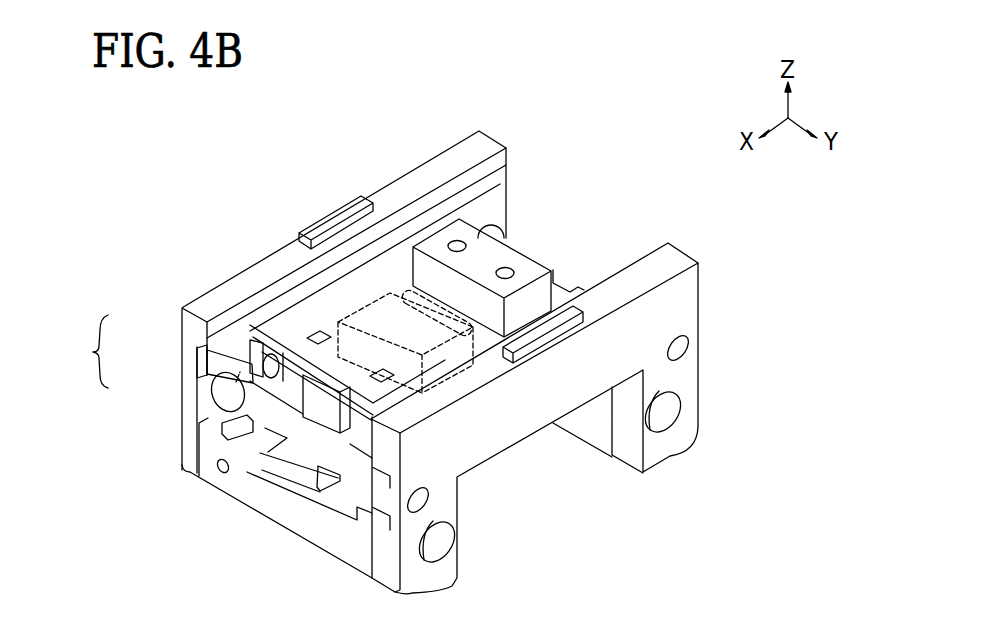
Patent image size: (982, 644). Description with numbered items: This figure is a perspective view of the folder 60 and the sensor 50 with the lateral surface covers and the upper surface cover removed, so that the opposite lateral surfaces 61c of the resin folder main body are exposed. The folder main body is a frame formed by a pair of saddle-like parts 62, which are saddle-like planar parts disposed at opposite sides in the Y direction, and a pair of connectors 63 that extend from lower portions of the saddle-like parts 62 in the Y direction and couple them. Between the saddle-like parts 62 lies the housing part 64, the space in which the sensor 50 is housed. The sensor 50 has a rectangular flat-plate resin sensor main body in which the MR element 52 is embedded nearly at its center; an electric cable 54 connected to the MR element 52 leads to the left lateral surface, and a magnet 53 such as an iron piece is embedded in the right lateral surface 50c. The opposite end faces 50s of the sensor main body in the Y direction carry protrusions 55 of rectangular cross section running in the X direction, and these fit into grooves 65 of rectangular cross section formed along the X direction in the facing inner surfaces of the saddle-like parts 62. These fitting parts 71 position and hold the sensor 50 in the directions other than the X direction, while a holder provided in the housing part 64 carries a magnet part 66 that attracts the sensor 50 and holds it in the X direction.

The folder 60 is at (704, 296).
The saddle-like parts 62 is at (262, 272).
The lateral surfaces 61c is at (187, 413).
The sensor 50 is at (293, 320).
The MR element 52 is at (379, 312).
The magnet 53 is at (443, 300).
The housing part 64 is at (468, 272).
The magnet part 66 is at (538, 253).
The connectors 63 is at (571, 291).
The fitting parts 71 is at (85, 351).
The protrusions 55 is at (197, 343).
The grooves 65 is at (197, 370).
The end faces 50s is at (203, 473).
The electric cable 54 is at (236, 382).
The lateral surface 50c is at (265, 388).